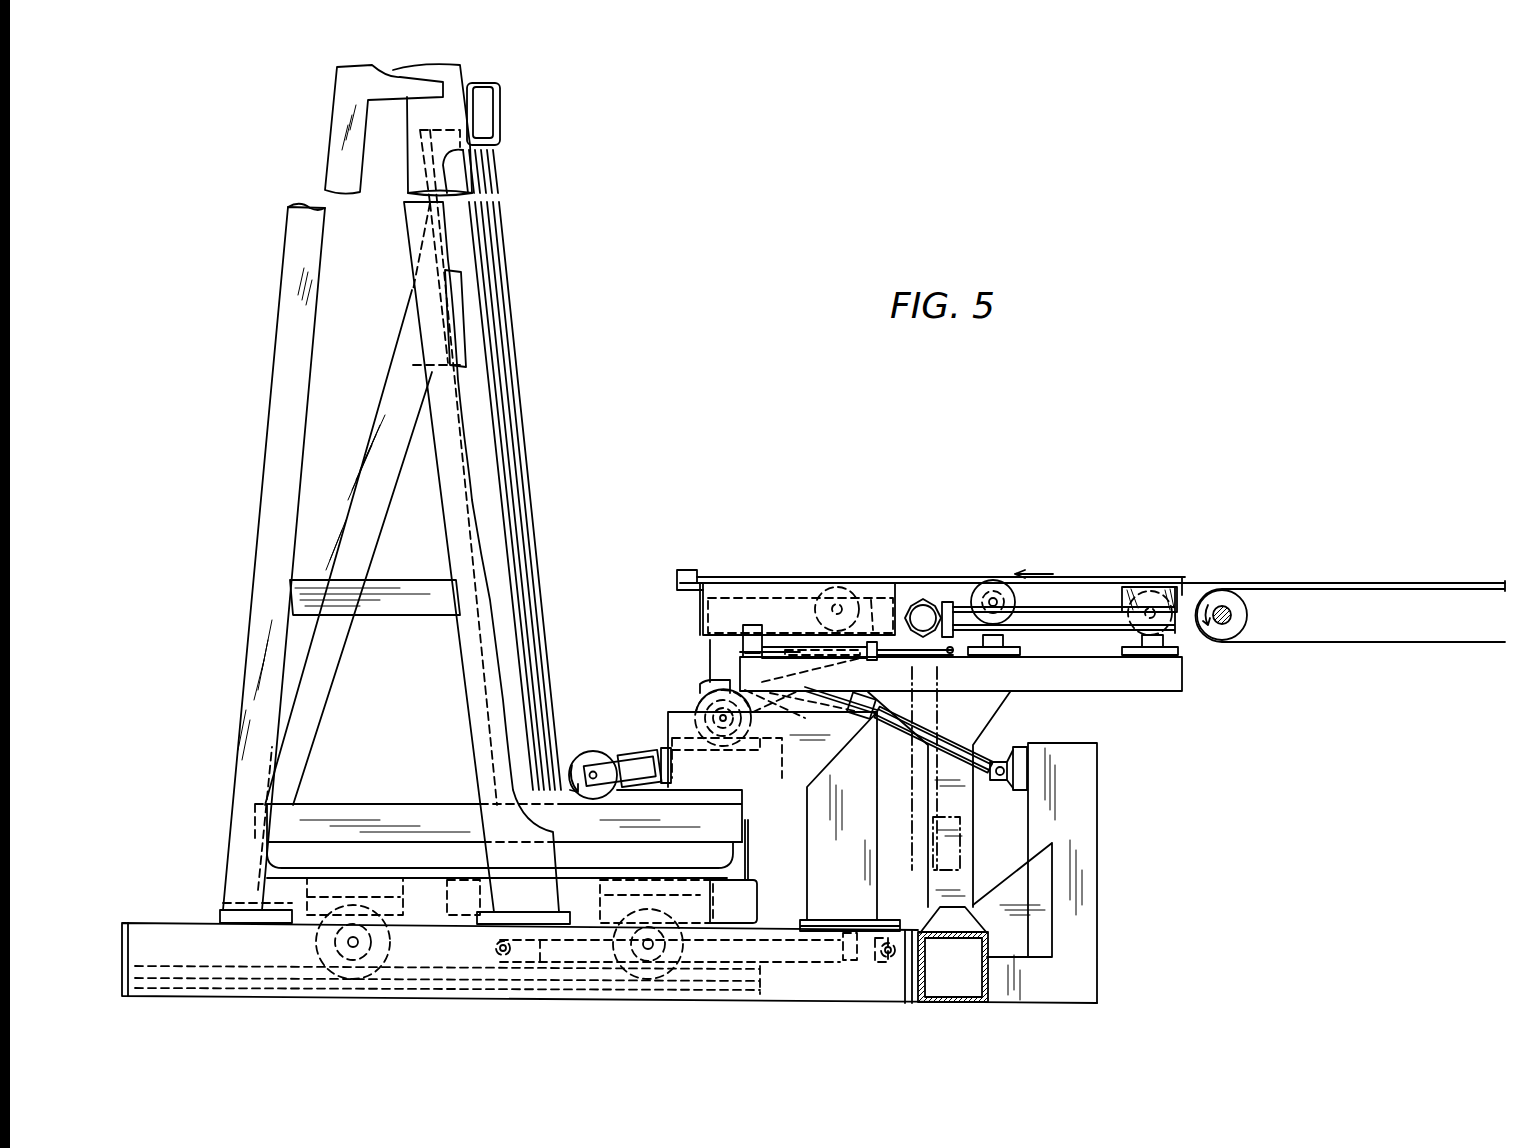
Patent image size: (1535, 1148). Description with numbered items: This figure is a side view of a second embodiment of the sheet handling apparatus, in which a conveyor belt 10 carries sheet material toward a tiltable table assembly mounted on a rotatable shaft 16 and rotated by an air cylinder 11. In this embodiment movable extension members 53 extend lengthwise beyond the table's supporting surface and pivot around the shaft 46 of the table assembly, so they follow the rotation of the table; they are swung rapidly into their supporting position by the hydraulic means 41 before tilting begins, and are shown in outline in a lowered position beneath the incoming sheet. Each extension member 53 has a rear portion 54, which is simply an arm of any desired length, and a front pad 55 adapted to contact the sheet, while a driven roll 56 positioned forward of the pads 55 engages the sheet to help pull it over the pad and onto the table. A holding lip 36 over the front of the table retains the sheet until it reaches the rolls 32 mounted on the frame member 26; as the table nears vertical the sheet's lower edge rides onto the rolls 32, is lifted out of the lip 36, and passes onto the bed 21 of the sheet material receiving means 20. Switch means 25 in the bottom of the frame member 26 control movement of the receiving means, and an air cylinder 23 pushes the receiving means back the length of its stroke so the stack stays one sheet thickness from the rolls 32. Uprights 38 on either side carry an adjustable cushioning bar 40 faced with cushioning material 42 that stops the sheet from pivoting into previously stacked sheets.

The conveyor belt 10 is at (1320, 644).
The air cylinder 11 is at (982, 746).
The rotatable shaft 16 is at (722, 710).
The sheet material receiving means 20 is at (278, 337).
The bed 21 is at (745, 790).
The air cylinder 23 is at (815, 938).
The switch means 25 is at (495, 962).
The frame member 26 is at (733, 828).
The roll 32 is at (588, 753).
The holding lip 36 is at (683, 570).
The upright 38 is at (457, 77).
The cushioning bar 40 is at (483, 112).
The hydraulic means 41 is at (873, 630).
The cushioning material 42 is at (500, 127).
The shaft 46 is at (924, 612).
The extension member 53 is at (908, 813).
The rear portion 54 is at (1055, 607).
The pad 55 is at (1128, 590).
The roll 56 is at (996, 585).